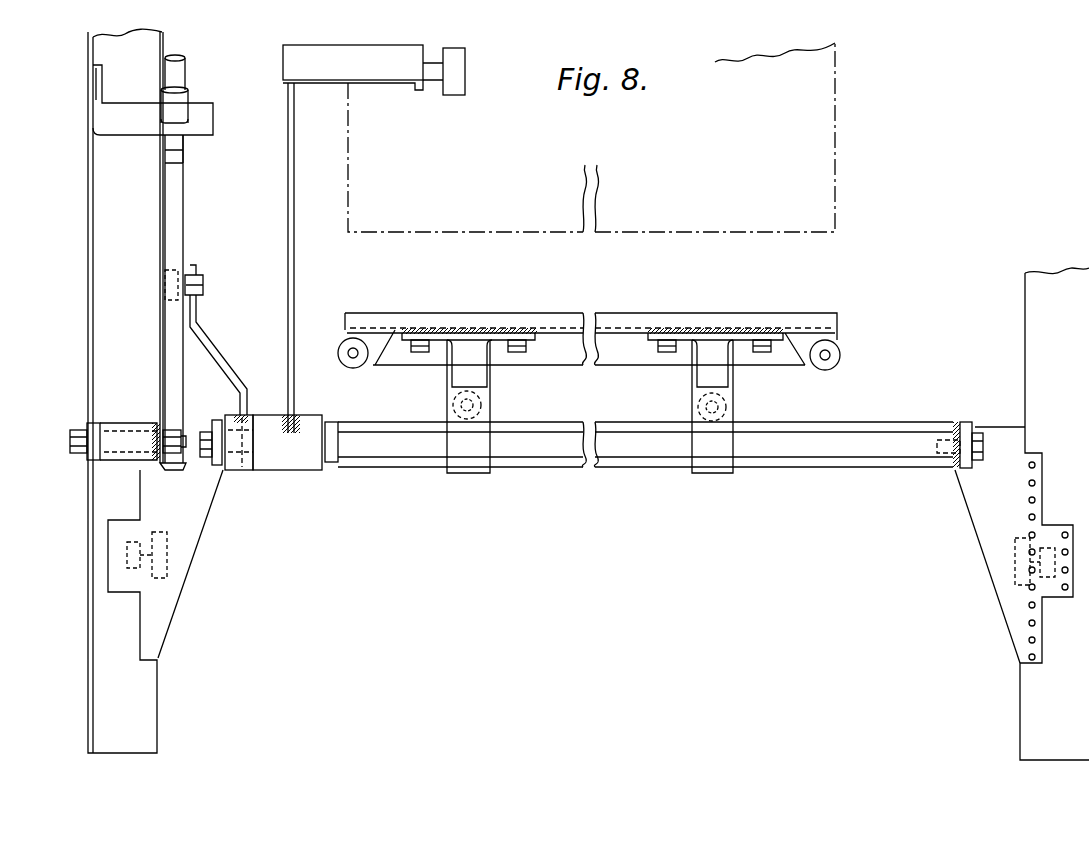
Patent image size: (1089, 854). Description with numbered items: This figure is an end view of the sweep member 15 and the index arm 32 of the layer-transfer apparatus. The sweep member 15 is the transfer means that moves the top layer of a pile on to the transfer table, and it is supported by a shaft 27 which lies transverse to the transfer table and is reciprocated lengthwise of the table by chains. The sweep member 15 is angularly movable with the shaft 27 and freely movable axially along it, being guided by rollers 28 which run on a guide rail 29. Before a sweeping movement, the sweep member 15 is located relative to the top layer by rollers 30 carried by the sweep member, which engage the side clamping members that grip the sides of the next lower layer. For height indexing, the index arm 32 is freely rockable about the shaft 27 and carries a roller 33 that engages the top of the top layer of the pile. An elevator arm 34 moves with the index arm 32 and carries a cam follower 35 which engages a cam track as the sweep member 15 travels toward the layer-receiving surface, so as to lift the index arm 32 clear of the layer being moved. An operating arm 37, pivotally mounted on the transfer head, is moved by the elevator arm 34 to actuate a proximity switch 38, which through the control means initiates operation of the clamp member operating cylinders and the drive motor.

The sweep member 15 is at (605, 335).
The shaft 27 is at (675, 452).
The rollers 28 is at (483, 403).
The guide rail 29 is at (617, 412).
The rollers 30 is at (366, 362).
The index arm 32 is at (295, 210).
The roller 33 is at (465, 88).
The elevator arm 34 is at (223, 360).
The cam follower 35 is at (157, 300).
The operating arm 37 is at (173, 380).
The proximity switch 38 is at (185, 142).